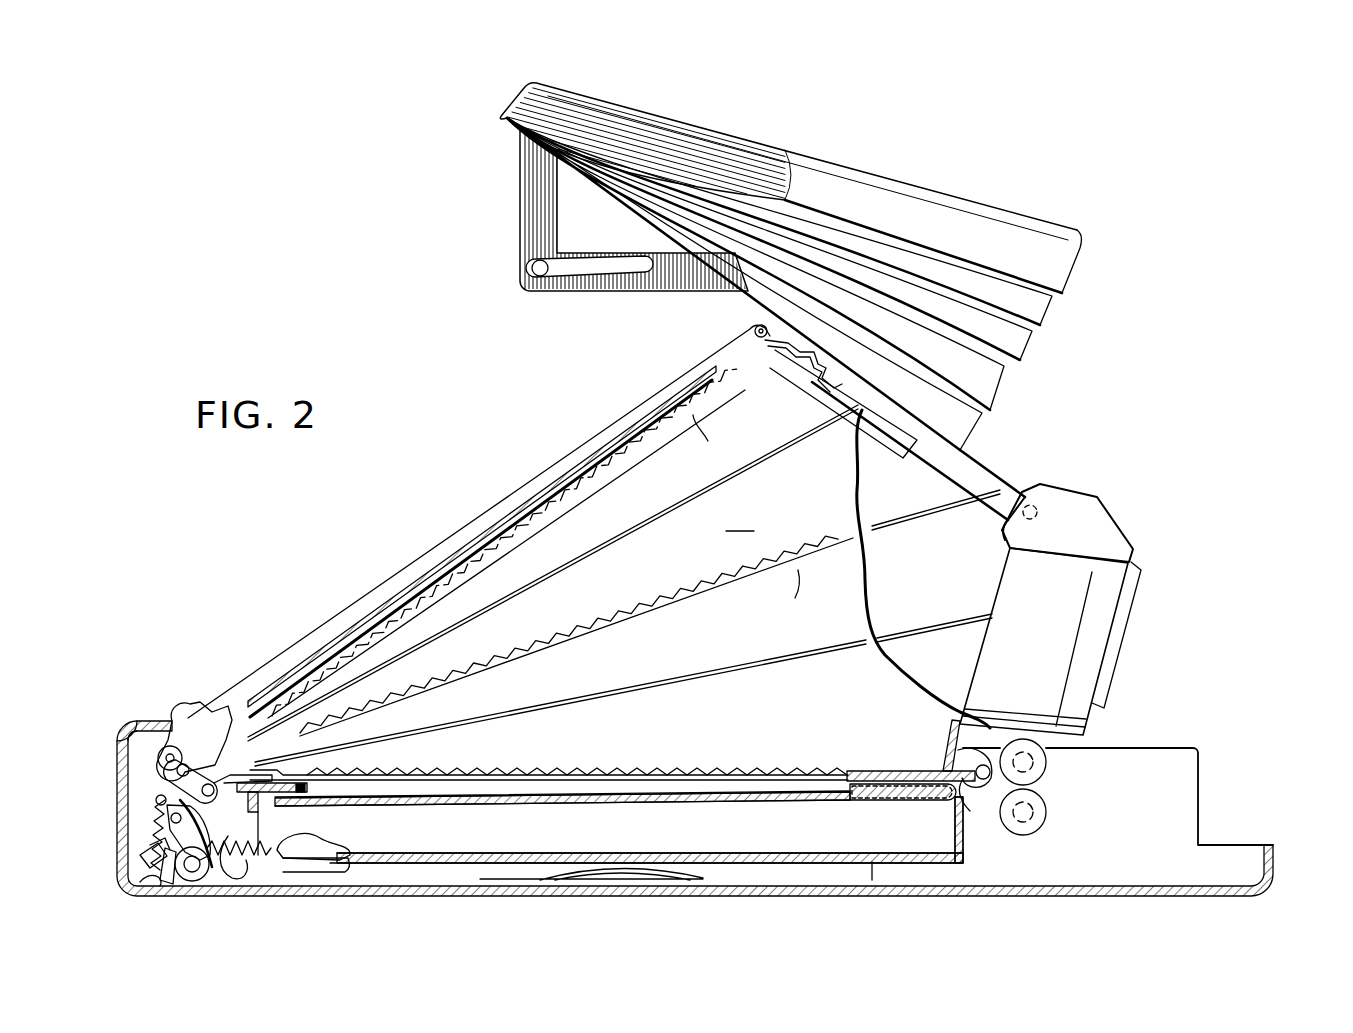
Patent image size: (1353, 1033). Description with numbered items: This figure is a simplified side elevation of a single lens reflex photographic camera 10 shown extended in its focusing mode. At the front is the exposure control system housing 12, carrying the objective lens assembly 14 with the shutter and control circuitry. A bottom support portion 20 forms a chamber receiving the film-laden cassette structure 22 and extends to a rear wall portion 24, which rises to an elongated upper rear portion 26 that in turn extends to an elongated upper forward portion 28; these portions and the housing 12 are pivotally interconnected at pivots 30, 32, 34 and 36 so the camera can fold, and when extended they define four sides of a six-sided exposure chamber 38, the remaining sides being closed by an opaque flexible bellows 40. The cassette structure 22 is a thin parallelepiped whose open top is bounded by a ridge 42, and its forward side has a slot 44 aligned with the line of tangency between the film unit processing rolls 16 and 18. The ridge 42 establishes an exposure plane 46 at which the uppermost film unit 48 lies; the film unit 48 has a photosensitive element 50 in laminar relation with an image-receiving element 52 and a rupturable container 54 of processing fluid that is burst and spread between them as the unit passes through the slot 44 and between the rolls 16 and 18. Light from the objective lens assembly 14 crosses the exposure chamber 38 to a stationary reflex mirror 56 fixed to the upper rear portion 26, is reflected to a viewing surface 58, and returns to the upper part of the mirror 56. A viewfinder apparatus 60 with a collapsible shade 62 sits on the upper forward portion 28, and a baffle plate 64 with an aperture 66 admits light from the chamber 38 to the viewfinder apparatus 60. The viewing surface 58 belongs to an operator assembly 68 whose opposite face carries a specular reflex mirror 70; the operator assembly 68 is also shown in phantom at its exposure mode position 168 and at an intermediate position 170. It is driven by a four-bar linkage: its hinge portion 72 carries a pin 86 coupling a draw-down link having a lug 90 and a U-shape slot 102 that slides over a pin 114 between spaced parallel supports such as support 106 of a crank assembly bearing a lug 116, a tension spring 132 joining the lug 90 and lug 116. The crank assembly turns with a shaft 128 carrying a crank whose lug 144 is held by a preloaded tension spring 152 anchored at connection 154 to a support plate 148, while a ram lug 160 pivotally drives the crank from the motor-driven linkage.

The photographic camera 10 is at (1082, 311).
The exposure control system housing 12 is at (1107, 518).
The objective lens assembly 14 is at (1135, 592).
The film unit processing roll 16 is at (1047, 762).
The film unit processing roll 18 is at (1047, 809).
The bottom support portion 20 is at (957, 900).
The film-laden cassette structure 22 is at (497, 858).
The rear wall portion 24 is at (120, 758).
The elongated upper rear portion 26 is at (420, 560).
The elongated upper forward portion 28 is at (978, 453).
The pivotal interconnection 30 is at (182, 728).
The pivotal interconnection 32 is at (755, 326).
The pivotal interconnection 34 is at (1050, 493).
The pivotal interconnection 36 is at (967, 790).
The exposure chamber 38 is at (624, 585).
The flexible bellows 40 is at (892, 698).
The ridge 42 is at (838, 770).
The slot 44 is at (958, 794).
The exposure plane 46 is at (632, 793).
The film unit 48 is at (698, 804).
The photosensitive element 50 is at (742, 800).
The image-receiving element 52 is at (566, 776).
The rupturable container 54 is at (887, 795).
The stationary reflex mirror 56 is at (657, 410).
The viewing surface 58 is at (642, 767).
The viewfinder apparatus 60 is at (498, 185).
The collapsible shade 62 is at (1025, 353).
The baffle plate 64 is at (890, 442).
The aperture 66 is at (800, 383).
The operator assembly 68 is at (327, 790).
The specular reflex mirror 70 is at (432, 792).
The hinge portion 72 is at (163, 778).
The pin 86 is at (214, 800).
The lug 90 is at (160, 797).
The U-shape slot 102 is at (165, 882).
The spaced parallel support 106 is at (188, 882).
The pin 114 is at (150, 857).
The lug 116 is at (138, 884).
The shaft 128 is at (200, 870).
The tension spring 132 is at (165, 843).
The lug 144 is at (168, 826).
The support plate 148 is at (330, 866).
The preloaded tension spring 152 is at (265, 870).
The spring connection 154 is at (338, 840).
The lug 160 is at (150, 812).
The exposure mode position 168 is at (573, 513).
The intermediate position 170 is at (687, 603).